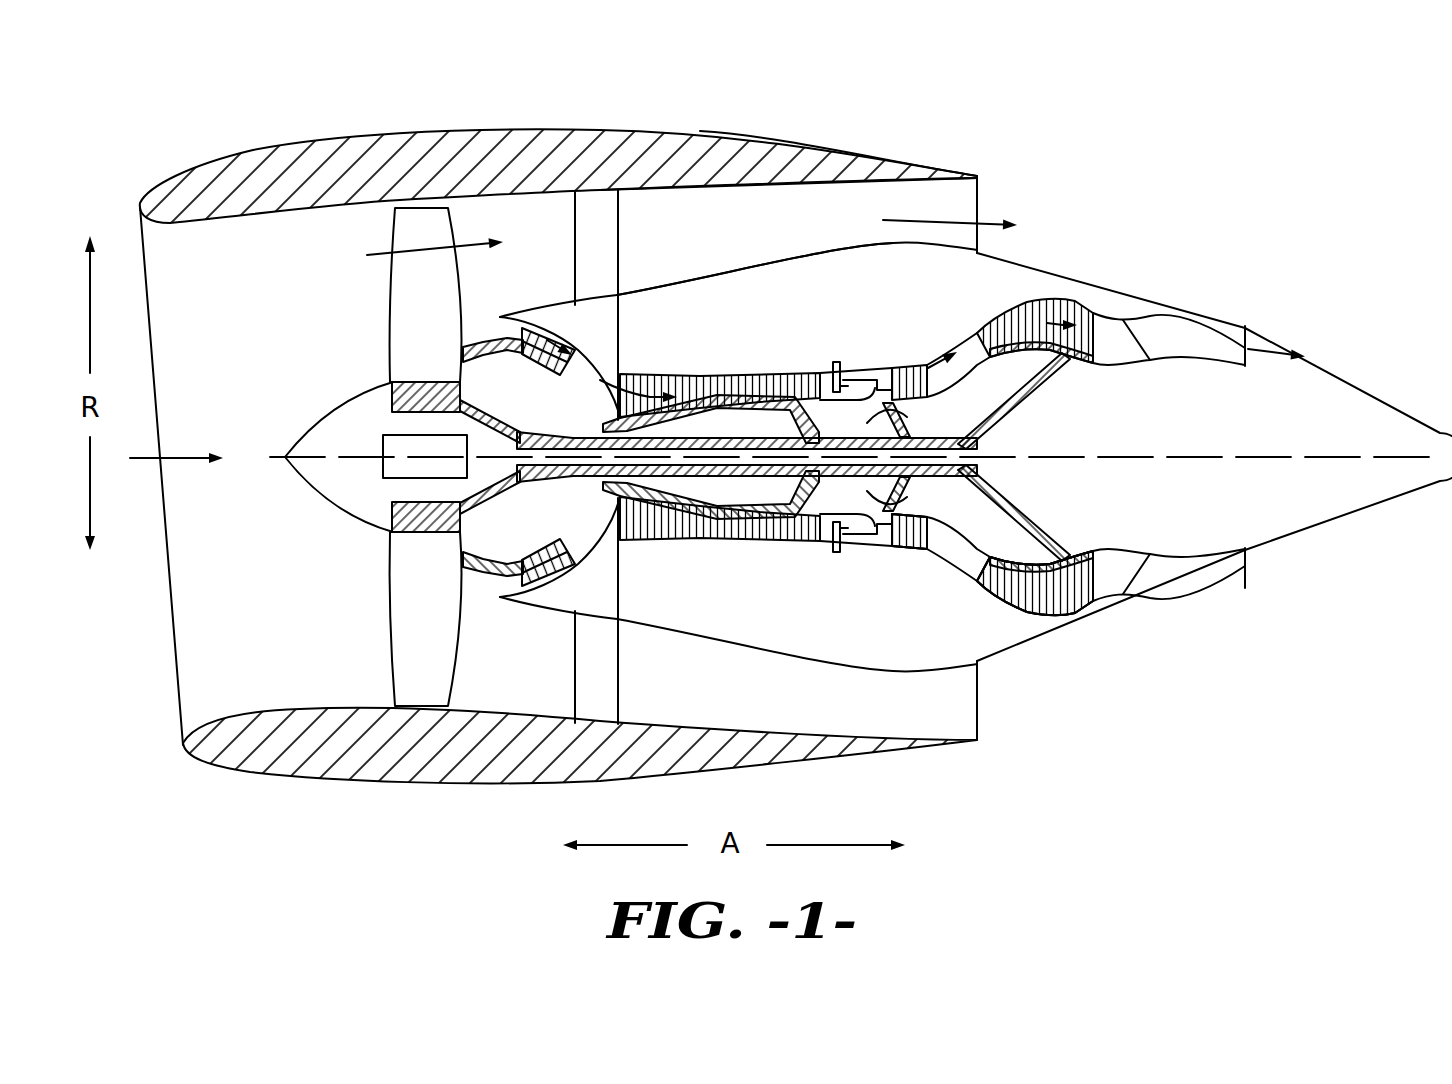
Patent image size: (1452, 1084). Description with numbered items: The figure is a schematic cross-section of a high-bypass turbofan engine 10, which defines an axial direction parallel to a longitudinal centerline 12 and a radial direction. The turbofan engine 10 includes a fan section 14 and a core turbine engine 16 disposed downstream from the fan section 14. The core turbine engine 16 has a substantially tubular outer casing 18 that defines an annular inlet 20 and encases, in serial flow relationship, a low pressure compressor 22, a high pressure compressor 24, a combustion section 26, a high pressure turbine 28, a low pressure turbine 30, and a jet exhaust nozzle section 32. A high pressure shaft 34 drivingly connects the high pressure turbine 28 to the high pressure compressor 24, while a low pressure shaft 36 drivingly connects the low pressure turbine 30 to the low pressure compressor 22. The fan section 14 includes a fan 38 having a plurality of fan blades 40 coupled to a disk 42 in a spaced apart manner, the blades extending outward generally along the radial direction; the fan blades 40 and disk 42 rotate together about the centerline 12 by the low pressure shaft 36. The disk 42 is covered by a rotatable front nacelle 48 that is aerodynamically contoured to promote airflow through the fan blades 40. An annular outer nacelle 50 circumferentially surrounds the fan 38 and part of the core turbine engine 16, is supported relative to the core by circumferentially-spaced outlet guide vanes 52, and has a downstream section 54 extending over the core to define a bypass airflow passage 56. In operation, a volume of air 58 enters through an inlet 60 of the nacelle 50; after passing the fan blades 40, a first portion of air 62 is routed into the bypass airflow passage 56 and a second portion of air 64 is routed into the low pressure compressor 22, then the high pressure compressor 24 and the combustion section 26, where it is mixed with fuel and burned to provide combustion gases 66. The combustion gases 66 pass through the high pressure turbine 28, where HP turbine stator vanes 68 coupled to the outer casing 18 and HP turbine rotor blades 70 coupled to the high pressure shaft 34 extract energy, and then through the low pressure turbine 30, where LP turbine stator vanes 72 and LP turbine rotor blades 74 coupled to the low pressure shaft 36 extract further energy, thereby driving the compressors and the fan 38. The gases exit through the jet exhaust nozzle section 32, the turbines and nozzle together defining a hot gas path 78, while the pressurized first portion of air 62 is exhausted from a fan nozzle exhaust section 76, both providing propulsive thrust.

The turbofan engine 10 is at (1230, 203).
The longitudinal centerline 12 is at (1157, 455).
The fan section 14 is at (478, 113).
The core turbine engine 16 is at (793, 334).
The outer casing 18 is at (817, 650).
The annular inlet 20 is at (510, 586).
The low pressure compressor 22 is at (580, 553).
The high pressure compressor 24 is at (652, 536).
The combustion section 26 is at (853, 537).
The high pressure turbine 28 is at (933, 542).
The low pressure turbine 30 is at (1077, 613).
The jet exhaust nozzle section 32 is at (1247, 337).
The high pressure shaft 34 is at (903, 407).
The low pressure shaft 36 is at (580, 438).
The fan 38 is at (379, 299).
The fan blades 40 is at (383, 650).
The disk 42 is at (387, 395).
The rotatable front nacelle 48 is at (310, 427).
The outer nacelle 50 is at (460, 790).
The outlet guide vanes 52 is at (618, 218).
The downstream section 54 is at (785, 141).
The bypass airflow passage 56 is at (737, 238).
The volume of air 58 is at (173, 453).
The inlet 60 is at (170, 693).
The first portion of air 62 is at (400, 243).
The second portion of air 64 is at (482, 330).
The combustion gases 66 is at (910, 375).
The HP turbine stator vanes 68 is at (893, 547).
The HP turbine rotor blades 70 is at (907, 543).
The LP turbine stator vanes 72 is at (990, 590).
The LP turbine rotor blades 74 is at (995, 590).
The fan nozzle exhaust section 76 is at (977, 198).
The hot gas path 78 is at (967, 345).